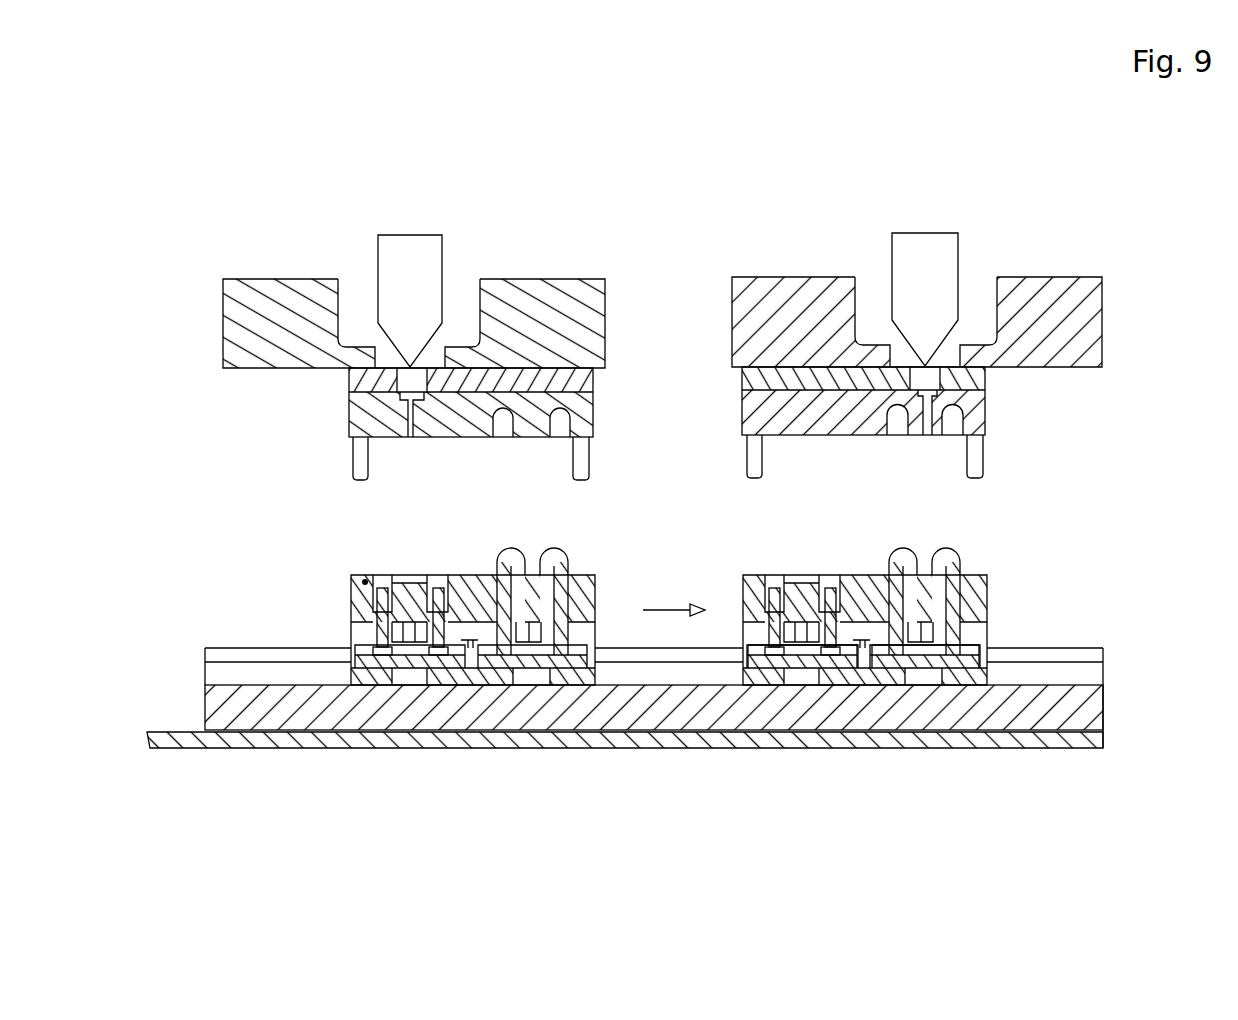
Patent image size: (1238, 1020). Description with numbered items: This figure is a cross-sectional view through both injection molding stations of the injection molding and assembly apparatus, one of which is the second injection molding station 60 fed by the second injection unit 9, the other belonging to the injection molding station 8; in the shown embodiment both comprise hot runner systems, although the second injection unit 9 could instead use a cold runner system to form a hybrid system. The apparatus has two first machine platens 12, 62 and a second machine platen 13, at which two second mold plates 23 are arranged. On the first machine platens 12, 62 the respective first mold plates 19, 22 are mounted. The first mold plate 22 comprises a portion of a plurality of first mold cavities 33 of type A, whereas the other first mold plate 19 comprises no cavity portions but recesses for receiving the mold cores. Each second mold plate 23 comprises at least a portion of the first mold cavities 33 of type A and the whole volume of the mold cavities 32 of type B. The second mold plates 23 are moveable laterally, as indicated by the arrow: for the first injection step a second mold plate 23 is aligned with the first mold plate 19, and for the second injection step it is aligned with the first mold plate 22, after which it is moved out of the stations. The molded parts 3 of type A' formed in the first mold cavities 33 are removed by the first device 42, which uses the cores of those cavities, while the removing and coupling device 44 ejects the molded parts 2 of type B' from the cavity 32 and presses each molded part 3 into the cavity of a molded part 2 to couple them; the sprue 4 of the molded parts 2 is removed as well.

The molded part of type B' 2 is at (380, 578).
The molded part of type A' 3 is at (985, 540).
The sprue 4 is at (1150, 471).
The injection molding station 8 is at (985, 245).
The second injection unit 9 is at (344, 242).
The first machine platen 12 is at (1097, 320).
The second machine platen 13 is at (1095, 738).
The first mold plate 19 is at (312, 410).
The first mold plate 22 is at (1020, 405).
The second mold plate 23 is at (306, 608).
The mold cavity of type B 32 is at (363, 583).
The first mold cavity of type A 33 is at (900, 435).
The first device 42 is at (882, 660).
The removing and coupling device 44 is at (775, 660).
The second injection molding station 60 is at (170, 481).
The first machine platen 62 is at (235, 297).